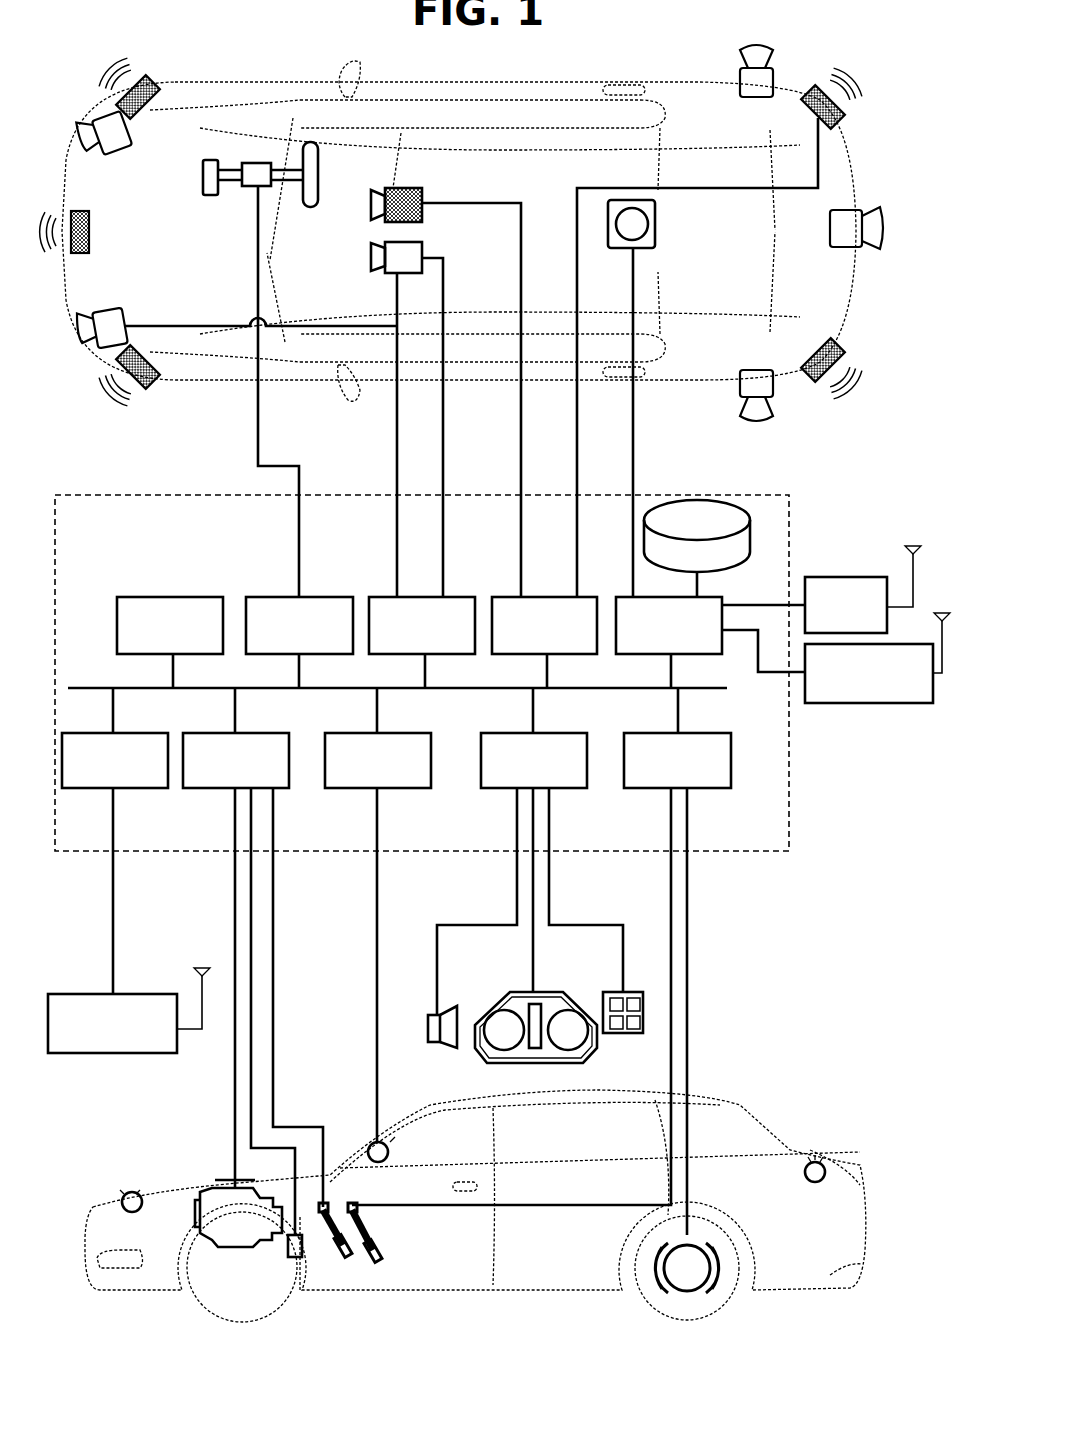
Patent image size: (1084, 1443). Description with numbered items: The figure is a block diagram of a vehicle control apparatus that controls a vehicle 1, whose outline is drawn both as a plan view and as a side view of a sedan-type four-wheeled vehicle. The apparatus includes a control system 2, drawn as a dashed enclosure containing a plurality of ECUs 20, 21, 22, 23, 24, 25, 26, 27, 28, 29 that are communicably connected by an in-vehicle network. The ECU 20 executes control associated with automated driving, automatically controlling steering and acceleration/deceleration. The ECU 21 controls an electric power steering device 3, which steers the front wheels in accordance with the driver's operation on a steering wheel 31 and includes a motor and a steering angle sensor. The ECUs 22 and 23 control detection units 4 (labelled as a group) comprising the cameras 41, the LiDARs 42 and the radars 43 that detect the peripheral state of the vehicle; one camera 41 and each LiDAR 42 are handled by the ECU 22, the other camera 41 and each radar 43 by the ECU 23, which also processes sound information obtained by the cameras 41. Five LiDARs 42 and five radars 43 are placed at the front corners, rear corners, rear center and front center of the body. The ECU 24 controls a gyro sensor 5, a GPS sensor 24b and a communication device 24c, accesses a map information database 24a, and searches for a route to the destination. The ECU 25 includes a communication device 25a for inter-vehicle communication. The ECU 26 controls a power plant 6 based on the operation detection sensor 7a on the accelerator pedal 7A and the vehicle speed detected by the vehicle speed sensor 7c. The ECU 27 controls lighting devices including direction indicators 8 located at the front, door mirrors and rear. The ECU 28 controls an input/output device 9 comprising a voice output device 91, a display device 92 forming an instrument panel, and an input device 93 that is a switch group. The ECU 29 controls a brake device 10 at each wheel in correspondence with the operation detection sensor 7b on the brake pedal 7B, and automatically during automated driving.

The vehicle 1 is at (868, 140).
The control system 2 is at (760, 851).
The electric power steering device 3 is at (210, 197).
The steering wheel 31 is at (310, 208).
The detection units 4 is at (100, 83).
The camera 41 is at (430, 212).
The LiDAR 42 is at (126, 160).
The millimeter wave radar 43 is at (146, 112).
The gyro sensor 5 is at (656, 226).
The power plant 6 is at (206, 1185).
The accelerator pedal 7A is at (352, 1258).
The operation detection sensor 7a is at (330, 1200).
The brake pedal 7B is at (378, 1228).
The operation detection sensor 7b is at (358, 1204).
The vehicle speed sensor 7c is at (297, 1257).
The direction indicators 8 is at (122, 1198).
The input/output device 9 is at (523, 946).
The voice output device 91 is at (428, 1020).
The display device 92 is at (494, 1004).
The input device 93 is at (618, 1034).
The brake device 10 is at (690, 1291).
The ECU 20 is at (204, 596).
The ECU 21 is at (332, 596).
The ECU 22 is at (422, 596).
The ECU 23 is at (549, 596).
The ECU 24 is at (617, 596).
The map information database 24a is at (692, 500).
The GPS sensor 24b is at (862, 576).
The communication device 24c is at (858, 704).
The ECU 25 is at (144, 790).
The communication device 25a is at (116, 1054).
The ECU 26 is at (212, 790).
The ECU 27 is at (410, 790).
The ECU 28 is at (576, 790).
The ECU 29 is at (715, 790).